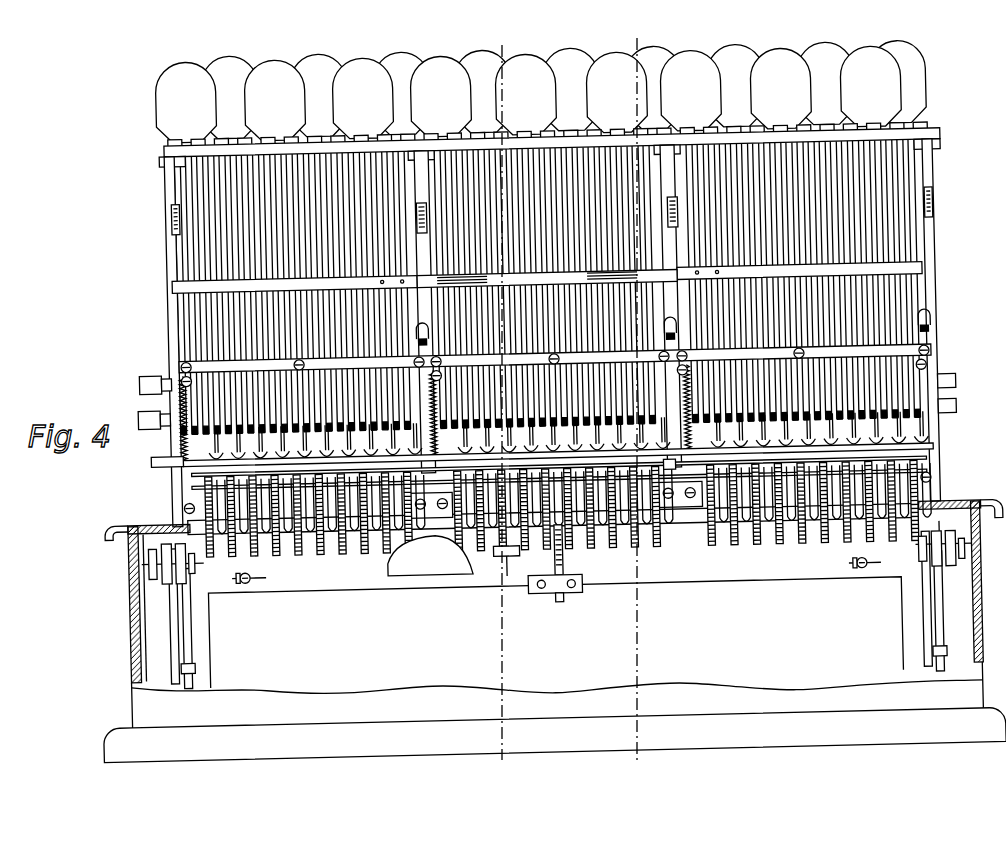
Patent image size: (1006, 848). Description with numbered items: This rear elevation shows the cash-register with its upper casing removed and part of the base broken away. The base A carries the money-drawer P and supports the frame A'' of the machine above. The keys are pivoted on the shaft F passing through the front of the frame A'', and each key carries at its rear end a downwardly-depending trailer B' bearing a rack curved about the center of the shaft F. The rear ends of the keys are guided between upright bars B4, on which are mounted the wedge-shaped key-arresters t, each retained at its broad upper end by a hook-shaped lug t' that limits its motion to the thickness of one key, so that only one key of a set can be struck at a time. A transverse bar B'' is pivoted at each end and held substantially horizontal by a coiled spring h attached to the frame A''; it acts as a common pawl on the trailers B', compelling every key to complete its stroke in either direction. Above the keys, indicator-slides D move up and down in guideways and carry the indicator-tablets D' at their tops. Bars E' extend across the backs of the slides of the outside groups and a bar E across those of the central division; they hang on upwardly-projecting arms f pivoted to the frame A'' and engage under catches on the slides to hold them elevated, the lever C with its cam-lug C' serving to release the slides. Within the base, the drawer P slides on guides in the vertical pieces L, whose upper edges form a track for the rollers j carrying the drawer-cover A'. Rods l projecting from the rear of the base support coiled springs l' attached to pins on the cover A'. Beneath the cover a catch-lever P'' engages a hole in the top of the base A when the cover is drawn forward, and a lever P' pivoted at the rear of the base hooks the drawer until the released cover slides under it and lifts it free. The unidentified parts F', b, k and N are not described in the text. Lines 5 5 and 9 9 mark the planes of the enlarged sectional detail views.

The indicator-tablet D' is at (541, 94).
The indicator-slide D is at (544, 282).
The frame A'' is at (552, 332).
The upwardly-projecting arm f is at (178, 237).
The bar E' is at (531, 292).
The bar E is at (547, 291).
The cam-lug C' is at (684, 328).
The lever C is at (564, 354).
The coiled spring h is at (187, 414).
The upper bracket F' is at (544, 381).
The shaft F is at (541, 413).
The bar B'' is at (534, 473).
The upright bar B4 is at (306, 480).
The drawer-cover A' is at (553, 514).
The lever b is at (668, 466).
The wedge-shaped piece t is at (530, 444).
The hook-shaped lug t' is at (166, 458).
The trailer portion B' is at (568, 499).
The base A is at (552, 631).
The money-drawer P is at (555, 632).
The vertical piece L is at (140, 612).
The bracket k is at (180, 618).
The roller j is at (150, 548).
The cam N is at (430, 555).
The catch-lever P'' is at (506, 561).
The lever P' is at (556, 563).
The rod l is at (558, 570).
The coiled spring l' is at (540, 570).
The section line 9 9 is at (492, 766).
The section line 5 5 is at (627, 762).